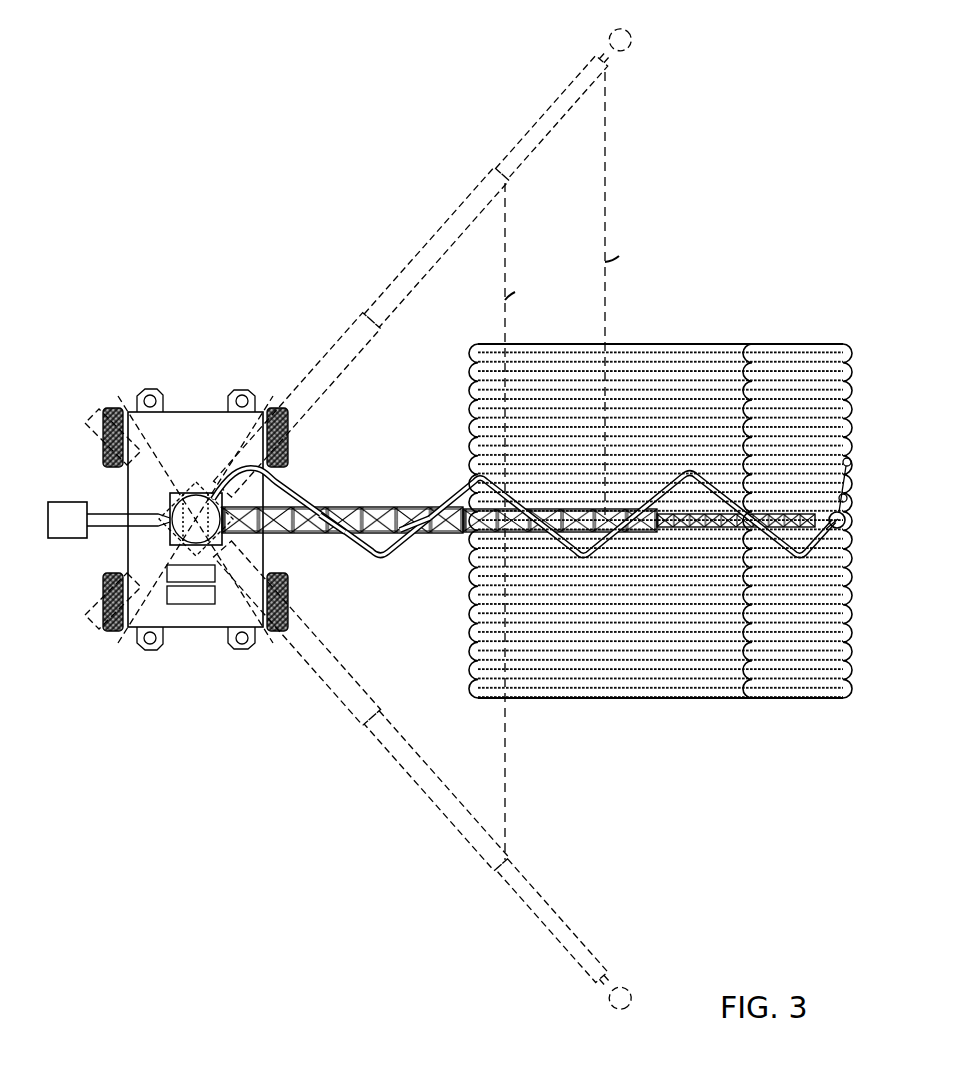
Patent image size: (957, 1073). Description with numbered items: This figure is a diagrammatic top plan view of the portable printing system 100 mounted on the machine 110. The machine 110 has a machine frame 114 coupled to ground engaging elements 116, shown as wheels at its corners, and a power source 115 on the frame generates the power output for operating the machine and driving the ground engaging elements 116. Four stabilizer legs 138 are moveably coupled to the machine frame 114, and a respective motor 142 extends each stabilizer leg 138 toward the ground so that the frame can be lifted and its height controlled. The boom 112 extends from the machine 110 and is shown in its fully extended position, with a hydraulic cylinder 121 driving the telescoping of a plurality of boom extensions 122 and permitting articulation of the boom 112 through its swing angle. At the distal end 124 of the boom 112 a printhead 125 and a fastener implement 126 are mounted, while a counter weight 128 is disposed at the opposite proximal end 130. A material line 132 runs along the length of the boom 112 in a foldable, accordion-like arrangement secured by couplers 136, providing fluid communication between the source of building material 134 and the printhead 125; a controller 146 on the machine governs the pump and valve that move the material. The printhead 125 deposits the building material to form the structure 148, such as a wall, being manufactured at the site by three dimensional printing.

The printing system 100 is at (392, 405).
The machine 110 is at (329, 519).
The boom 112 is at (518, 558).
The machine frame 114 is at (191, 615).
The power source 115 is at (191, 574).
The ground engaging element 116 is at (102, 585).
The hydraulic cylinder 121 is at (208, 492).
The boom extension 122 is at (466, 540).
The distal end 124 is at (855, 517).
The printhead 125 is at (847, 501).
The fastener implement 126 is at (849, 459).
The counter weight 128 is at (62, 498).
The proximal end 130 is at (101, 487).
The material line 132 is at (523, 496).
The source of building material 134 is at (183, 492).
The coupler 136 is at (346, 510).
The stabilizer leg 138 is at (150, 395).
The motor 142 is at (165, 401).
The controller 146 is at (191, 595).
The structure 148 is at (774, 337).